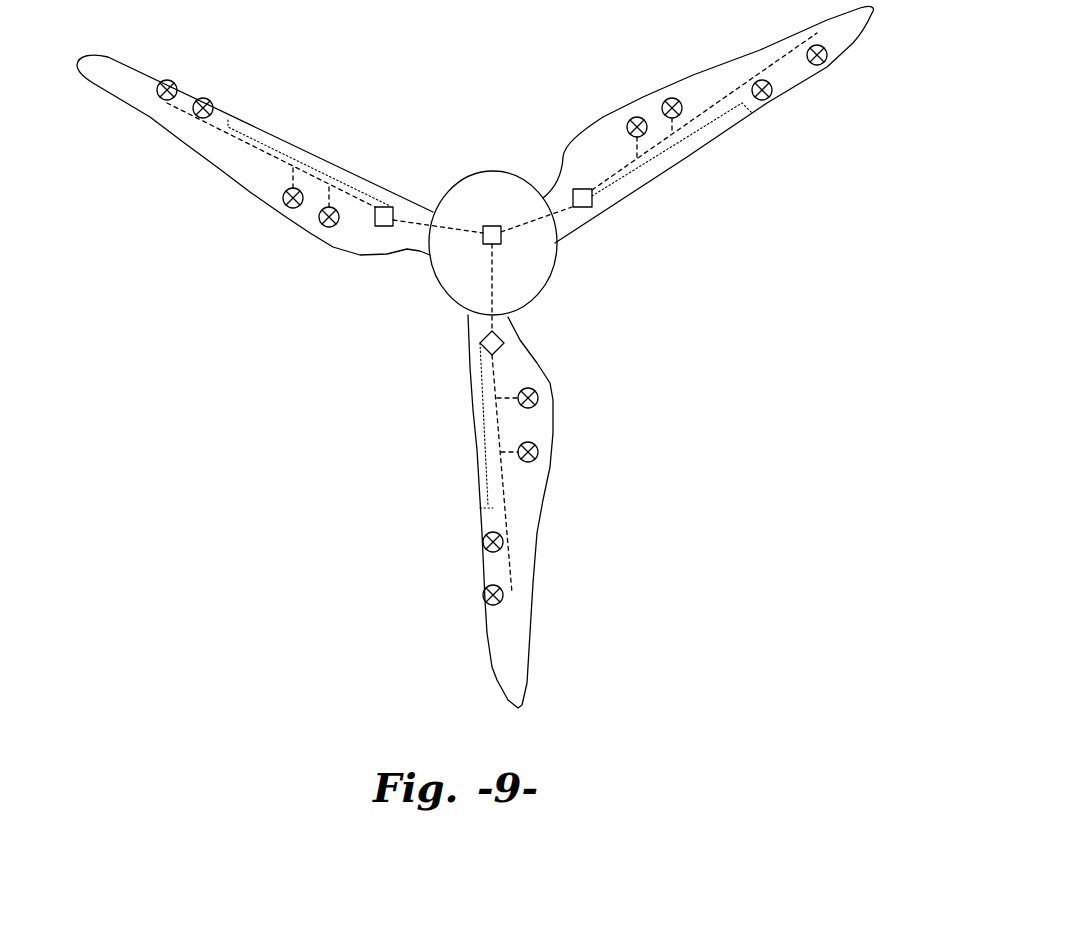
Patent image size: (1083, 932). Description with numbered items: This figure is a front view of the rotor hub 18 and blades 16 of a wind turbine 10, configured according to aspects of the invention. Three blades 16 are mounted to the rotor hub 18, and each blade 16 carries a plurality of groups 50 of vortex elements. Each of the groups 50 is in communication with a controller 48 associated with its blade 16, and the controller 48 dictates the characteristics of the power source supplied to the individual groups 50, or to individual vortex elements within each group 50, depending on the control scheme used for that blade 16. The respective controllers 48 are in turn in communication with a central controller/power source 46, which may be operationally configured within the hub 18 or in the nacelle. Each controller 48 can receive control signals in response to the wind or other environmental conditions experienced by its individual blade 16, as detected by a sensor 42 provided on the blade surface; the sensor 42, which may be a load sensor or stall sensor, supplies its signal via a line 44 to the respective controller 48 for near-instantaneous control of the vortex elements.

The wind turbine 10 is at (440, 92).
The turbine blade 16 is at (195, 137).
The rotor hub 18 is at (500, 192).
The sensor 42 is at (230, 122).
The line 44 is at (320, 173).
The central controller/power source 46 is at (501, 231).
The controller 48 is at (392, 210).
The group of vortex elements 50 is at (172, 85).